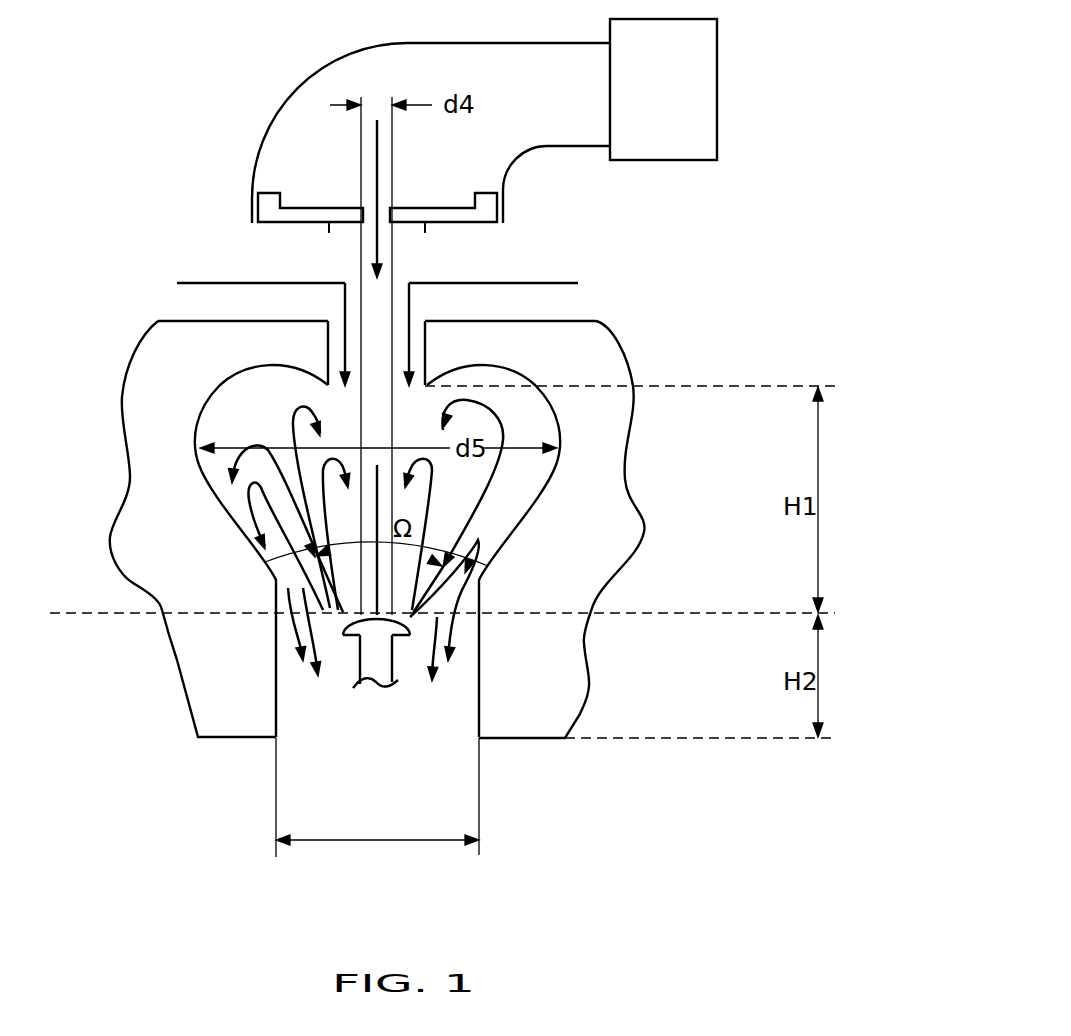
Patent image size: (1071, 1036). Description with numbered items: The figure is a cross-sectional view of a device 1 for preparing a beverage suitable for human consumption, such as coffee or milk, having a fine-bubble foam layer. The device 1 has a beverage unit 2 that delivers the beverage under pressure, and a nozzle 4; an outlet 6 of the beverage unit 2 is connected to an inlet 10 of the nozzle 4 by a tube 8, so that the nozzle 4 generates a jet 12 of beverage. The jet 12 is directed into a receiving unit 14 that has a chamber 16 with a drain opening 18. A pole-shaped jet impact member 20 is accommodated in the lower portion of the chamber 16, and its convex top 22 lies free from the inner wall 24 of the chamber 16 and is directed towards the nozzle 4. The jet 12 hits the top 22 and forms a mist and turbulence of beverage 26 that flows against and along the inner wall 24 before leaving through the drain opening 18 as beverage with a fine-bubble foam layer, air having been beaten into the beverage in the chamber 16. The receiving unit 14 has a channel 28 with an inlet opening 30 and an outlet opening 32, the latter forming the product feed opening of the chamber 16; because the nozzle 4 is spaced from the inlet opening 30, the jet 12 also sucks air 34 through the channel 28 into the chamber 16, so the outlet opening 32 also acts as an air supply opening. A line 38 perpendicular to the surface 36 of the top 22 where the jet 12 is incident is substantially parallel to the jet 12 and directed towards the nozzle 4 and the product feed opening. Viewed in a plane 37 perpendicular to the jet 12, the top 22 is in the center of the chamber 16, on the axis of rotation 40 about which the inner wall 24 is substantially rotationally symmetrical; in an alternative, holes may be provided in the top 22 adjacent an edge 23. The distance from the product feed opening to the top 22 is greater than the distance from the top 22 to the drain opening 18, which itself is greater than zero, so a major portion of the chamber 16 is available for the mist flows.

The device 1 is at (377, 529).
The beverage unit 2 is at (692, 89).
The nozzle 4 is at (383, 213).
The outlet 6 is at (612, 90).
The tube 8 is at (302, 88).
The inlet 10 is at (372, 213).
The jet 12 is at (361, 278).
The receiving unit 14 is at (427, 353).
The chamber 16 is at (251, 431).
The drain opening 18 is at (285, 758).
The jet impact member 20 is at (370, 668).
The top 22 is at (377, 623).
The edge 23 is at (350, 633).
The inner wall 24 is at (197, 433).
The beverage 26 is at (293, 603).
The channel 28 is at (326, 352).
The inlet opening 30 is at (342, 320).
The outlet opening 32 is at (353, 387).
The air 34 is at (218, 282).
The surface 36 is at (400, 640).
The plane 37 is at (628, 617).
The perpendicular line 38 is at (380, 498).
The axis of rotation 40 is at (380, 468).